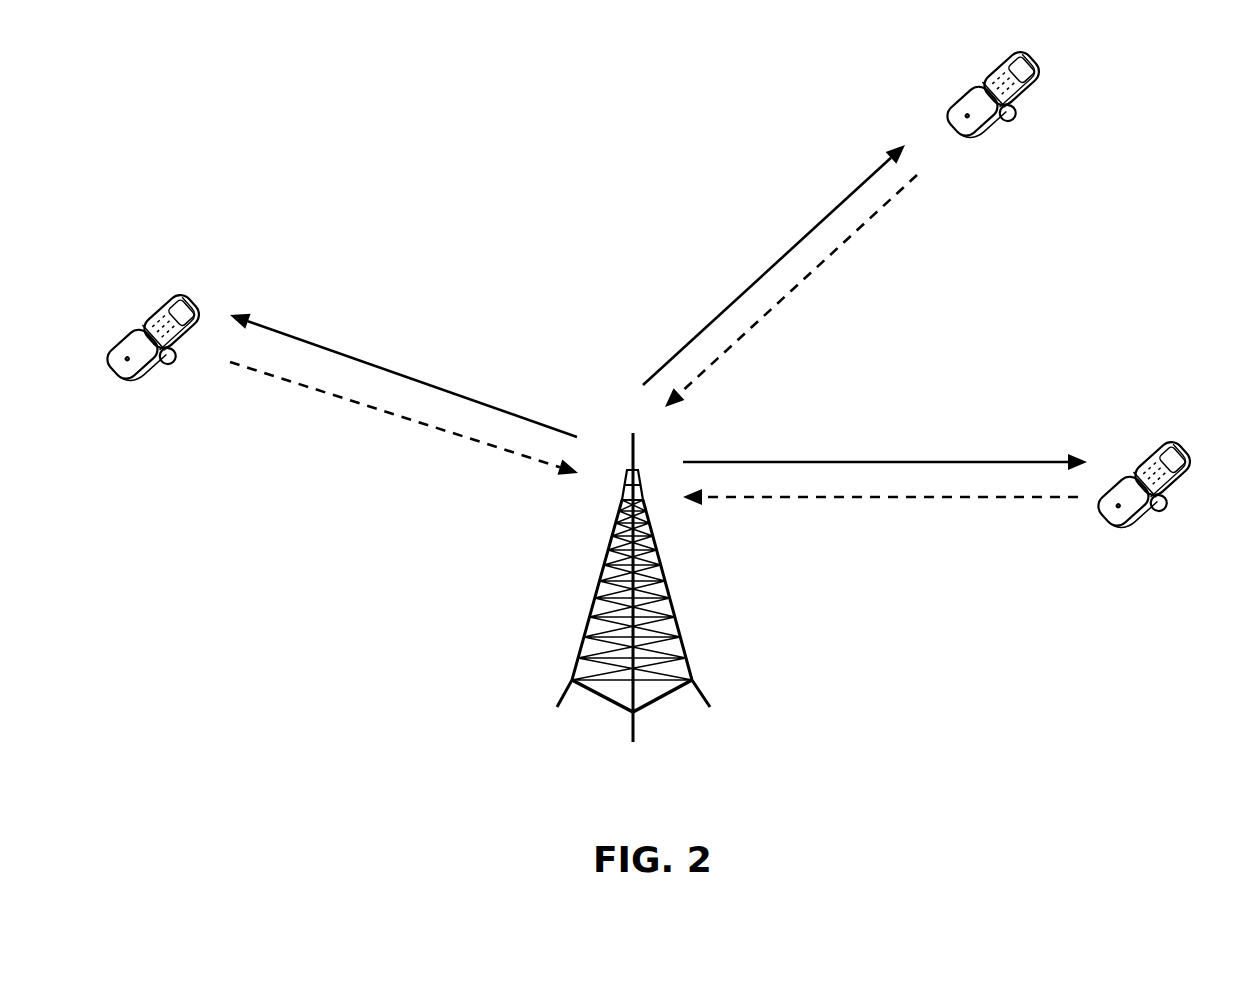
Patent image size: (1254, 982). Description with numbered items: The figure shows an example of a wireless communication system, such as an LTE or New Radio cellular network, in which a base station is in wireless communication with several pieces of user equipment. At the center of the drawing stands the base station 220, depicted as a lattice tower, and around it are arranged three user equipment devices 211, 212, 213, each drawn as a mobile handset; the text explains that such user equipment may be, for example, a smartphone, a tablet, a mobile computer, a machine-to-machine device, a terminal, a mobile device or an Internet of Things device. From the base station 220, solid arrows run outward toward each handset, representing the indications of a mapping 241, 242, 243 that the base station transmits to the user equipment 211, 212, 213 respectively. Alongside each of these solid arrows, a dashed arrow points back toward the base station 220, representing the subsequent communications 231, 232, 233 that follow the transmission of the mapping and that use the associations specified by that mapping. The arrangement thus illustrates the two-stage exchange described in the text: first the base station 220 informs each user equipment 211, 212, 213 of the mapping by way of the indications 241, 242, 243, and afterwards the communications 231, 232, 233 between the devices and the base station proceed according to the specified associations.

The first user equipment (mobile terminal) 211 is at (168, 378).
The second user equipment (mobile terminal) 212 is at (1155, 525).
The third user equipment (mobile terminal) 213 is at (1008, 135).
The base station 220 is at (690, 662).
The subsequent communication 231 is at (448, 432).
The subsequent communication 232 is at (847, 498).
The subsequent communication 233 is at (815, 263).
The indication of a mapping 241 is at (338, 355).
The indication of a mapping 242 is at (997, 460).
The indication of a mapping 243 is at (825, 215).